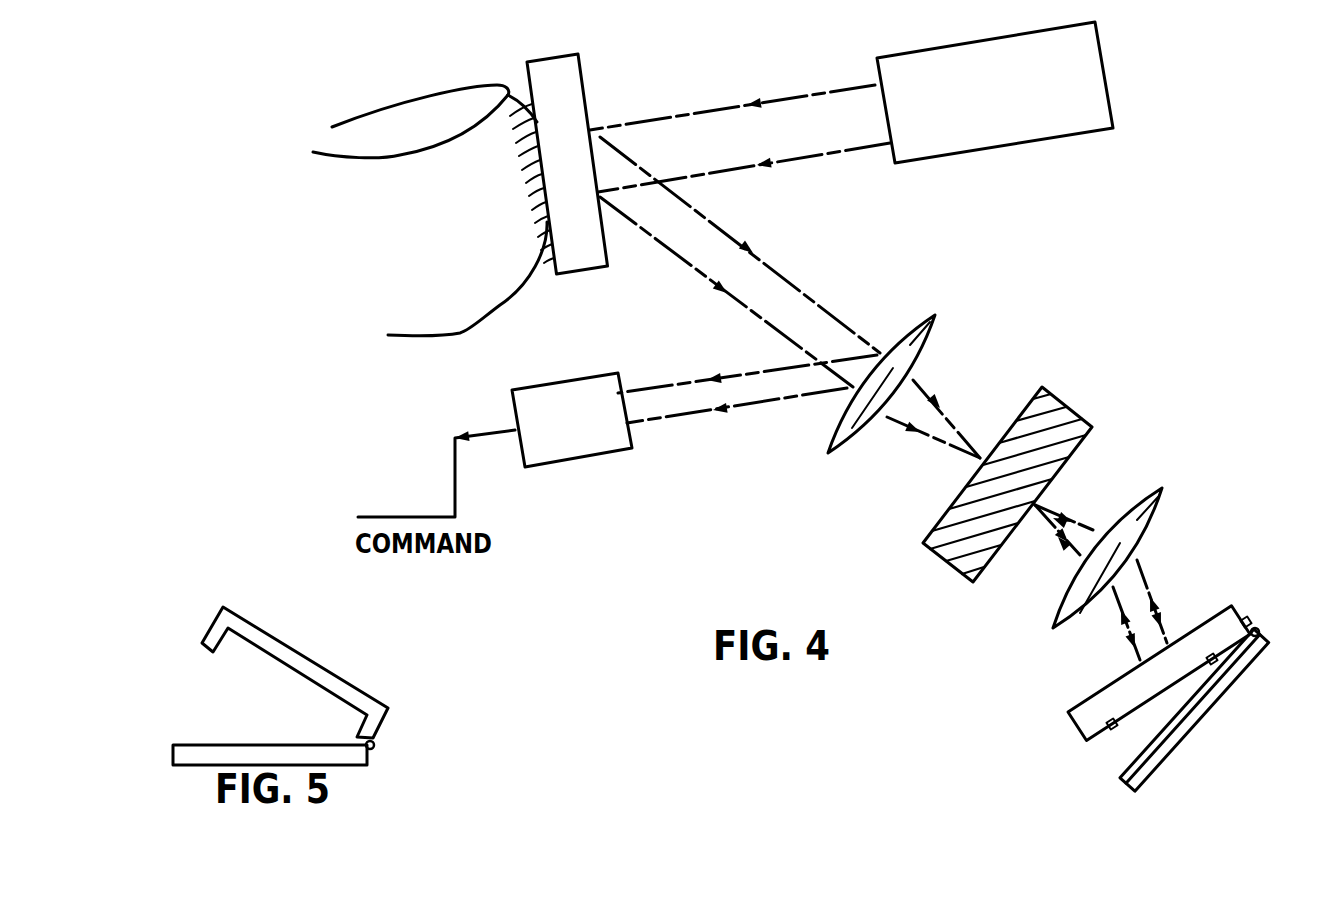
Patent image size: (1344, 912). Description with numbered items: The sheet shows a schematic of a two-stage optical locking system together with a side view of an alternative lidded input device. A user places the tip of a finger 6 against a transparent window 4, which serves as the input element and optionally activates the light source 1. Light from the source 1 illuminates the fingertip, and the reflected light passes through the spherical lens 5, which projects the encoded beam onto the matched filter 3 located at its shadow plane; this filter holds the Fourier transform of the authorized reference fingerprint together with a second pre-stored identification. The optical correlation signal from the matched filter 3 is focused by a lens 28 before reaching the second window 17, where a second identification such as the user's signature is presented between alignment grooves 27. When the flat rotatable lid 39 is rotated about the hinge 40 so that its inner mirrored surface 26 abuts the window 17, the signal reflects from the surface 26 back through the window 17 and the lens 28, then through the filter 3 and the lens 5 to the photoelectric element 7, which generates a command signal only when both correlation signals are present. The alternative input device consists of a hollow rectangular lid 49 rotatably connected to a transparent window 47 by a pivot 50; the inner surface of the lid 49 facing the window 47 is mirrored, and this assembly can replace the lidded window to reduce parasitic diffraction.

In FIG. 4, the light source 1 is at (990, 145).
In FIG. 4, the matched filter 3 is at (947, 557).
In FIG. 4, the transparent window 4 is at (578, 267).
In FIG. 4, the spherical lens 5 is at (830, 455).
In FIG. 4, the finger 6 is at (443, 232).
In FIG. 4, the photoelectric element 7 is at (577, 455).
In FIG. 4, the second window 17 is at (1110, 687).
In FIG. 4, the inner mirrored surface 26 is at (1127, 763).
In FIG. 4, the alignment grooves 27 is at (1212, 653).
In FIG. 4, the lens 28 is at (1143, 495).
In FIG. 4, the rotatable lid 39 is at (1185, 743).
In FIG. 4, the hinge 40 is at (1258, 628).
In FIG. 5, the transparent window 47 is at (190, 766).
In FIG. 5, the hollow rectangular lid 49 is at (312, 659).
In FIG. 5, the pivot 50 is at (377, 743).